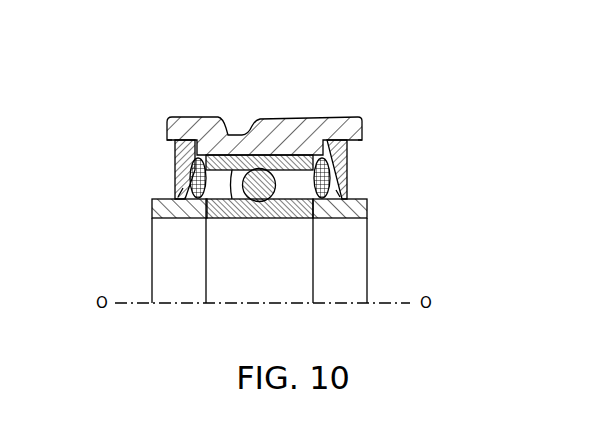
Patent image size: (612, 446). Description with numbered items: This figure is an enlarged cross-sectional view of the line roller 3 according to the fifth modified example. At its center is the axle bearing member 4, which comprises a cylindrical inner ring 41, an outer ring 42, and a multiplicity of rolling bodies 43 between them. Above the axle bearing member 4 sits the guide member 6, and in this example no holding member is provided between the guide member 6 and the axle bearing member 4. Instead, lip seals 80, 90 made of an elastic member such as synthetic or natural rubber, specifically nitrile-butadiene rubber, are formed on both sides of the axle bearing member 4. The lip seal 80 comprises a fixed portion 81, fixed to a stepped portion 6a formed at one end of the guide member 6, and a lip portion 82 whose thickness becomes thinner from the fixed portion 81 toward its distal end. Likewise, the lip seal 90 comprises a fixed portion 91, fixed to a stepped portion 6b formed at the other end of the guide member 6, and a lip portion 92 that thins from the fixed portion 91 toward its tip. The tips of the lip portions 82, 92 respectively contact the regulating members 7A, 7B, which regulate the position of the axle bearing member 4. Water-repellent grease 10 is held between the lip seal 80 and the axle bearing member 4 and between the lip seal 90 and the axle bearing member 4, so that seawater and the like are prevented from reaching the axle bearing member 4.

The line roller 3 is at (258, 52).
The axle bearing member 4 is at (259, 248).
The guide member 6 is at (279, 120).
The stepped portion 6a is at (174, 138).
The stepped portion 6b is at (362, 140).
The regulating member 7A is at (152, 207).
The regulating member 7B is at (367, 206).
The water-repellent grease 10 is at (178, 191).
The inner ring 41 is at (282, 217).
The outer ring 42 is at (231, 199).
The rolling bodies 43 is at (262, 176).
The lip seal 80 is at (146, 168).
The fixed portion 81 is at (175, 150).
The lip portion 82 is at (176, 183).
The lip seal 90 is at (376, 169).
The fixed portion 91 is at (347, 156).
The lip portion 92 is at (347, 180).